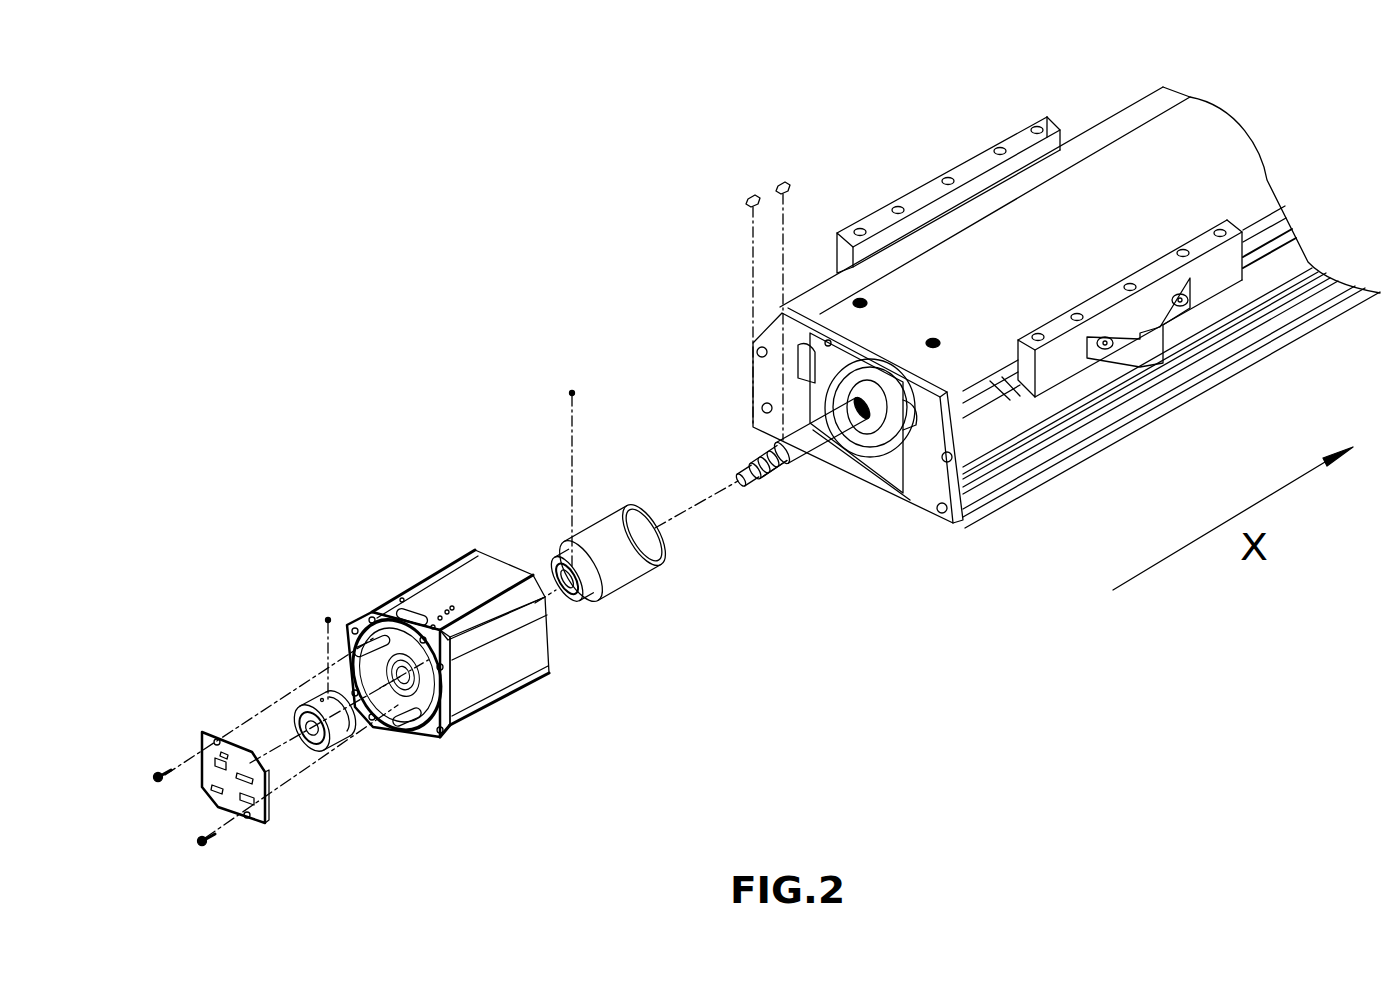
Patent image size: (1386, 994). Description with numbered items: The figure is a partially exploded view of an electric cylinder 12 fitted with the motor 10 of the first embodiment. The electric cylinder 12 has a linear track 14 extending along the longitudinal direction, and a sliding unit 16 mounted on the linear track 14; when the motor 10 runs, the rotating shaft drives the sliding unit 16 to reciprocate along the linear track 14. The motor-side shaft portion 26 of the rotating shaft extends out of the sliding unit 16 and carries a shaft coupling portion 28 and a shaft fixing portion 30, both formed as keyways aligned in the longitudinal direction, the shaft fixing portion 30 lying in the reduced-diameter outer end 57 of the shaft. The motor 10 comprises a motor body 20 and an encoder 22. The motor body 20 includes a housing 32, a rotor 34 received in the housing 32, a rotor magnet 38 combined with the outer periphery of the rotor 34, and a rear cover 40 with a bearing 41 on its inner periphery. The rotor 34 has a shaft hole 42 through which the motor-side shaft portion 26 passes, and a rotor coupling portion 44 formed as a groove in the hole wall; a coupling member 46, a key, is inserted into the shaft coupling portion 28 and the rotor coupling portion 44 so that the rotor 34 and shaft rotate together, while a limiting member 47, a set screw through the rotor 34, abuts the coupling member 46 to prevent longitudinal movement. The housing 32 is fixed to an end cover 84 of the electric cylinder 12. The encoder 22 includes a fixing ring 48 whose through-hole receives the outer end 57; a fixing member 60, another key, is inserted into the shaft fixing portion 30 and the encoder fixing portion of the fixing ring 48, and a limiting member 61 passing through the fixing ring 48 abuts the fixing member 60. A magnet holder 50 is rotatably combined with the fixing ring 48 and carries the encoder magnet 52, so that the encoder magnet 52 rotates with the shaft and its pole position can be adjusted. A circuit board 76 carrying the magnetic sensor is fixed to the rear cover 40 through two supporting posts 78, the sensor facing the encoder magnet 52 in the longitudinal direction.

The motor 10 is at (437, 507).
The electric cylinder 12 is at (883, 143).
The linear track 14 is at (1213, 380).
The sliding unit 16 is at (1085, 107).
The motor body 20 is at (470, 674).
The encoder 22 is at (286, 734).
The motor-side shaft portion 26 is at (807, 443).
The shaft coupling portion 28 is at (787, 445).
The shaft fixing portion 30 is at (758, 480).
The housing 32 is at (527, 665).
The rotor 34 is at (643, 574).
The rotor magnet 38 is at (668, 547).
The rear cover 40 is at (384, 640).
The bearing 41 is at (412, 735).
The shaft hole 42 is at (567, 597).
The rotor coupling portion 44 is at (590, 559).
The coupling member 46 is at (783, 180).
The limiting member 47 is at (570, 393).
The fixing ring 48 is at (340, 735).
The magnet holder 50 is at (300, 718).
The encoder magnet 52 is at (313, 740).
The outer end 57 is at (733, 471).
The fixing member 60 is at (750, 200).
The limiting member 61 is at (327, 619).
The circuit board 76 is at (205, 742).
The supporting posts 78 is at (385, 635).
The end cover 84 is at (928, 498).